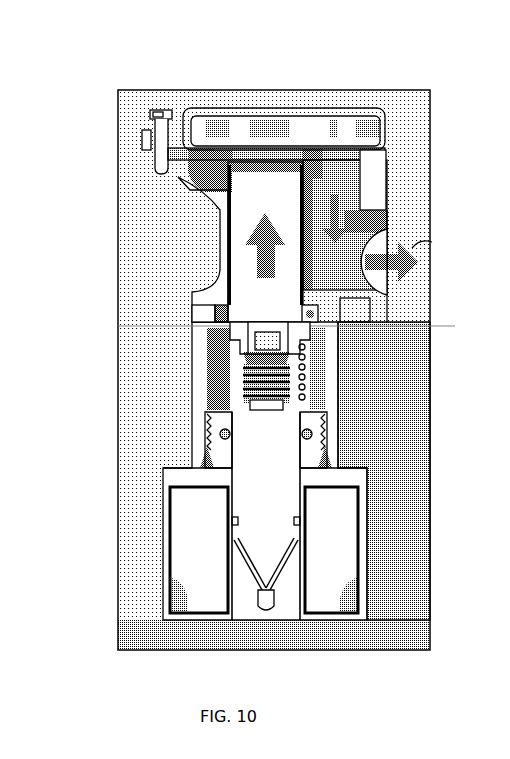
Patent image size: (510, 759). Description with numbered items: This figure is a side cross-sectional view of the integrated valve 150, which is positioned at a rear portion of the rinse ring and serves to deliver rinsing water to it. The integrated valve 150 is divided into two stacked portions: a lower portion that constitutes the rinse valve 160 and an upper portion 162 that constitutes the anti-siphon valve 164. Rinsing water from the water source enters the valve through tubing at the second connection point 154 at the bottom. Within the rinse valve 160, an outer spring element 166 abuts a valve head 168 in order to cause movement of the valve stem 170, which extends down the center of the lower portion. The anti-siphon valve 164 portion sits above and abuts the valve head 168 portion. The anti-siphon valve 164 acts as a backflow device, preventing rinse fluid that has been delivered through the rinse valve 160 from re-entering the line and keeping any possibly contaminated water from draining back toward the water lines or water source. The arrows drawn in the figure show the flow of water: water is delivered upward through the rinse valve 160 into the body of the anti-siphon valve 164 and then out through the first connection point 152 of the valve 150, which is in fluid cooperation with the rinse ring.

The integrated valve 150 is at (206, 92).
The first connection point 152 is at (384, 230).
The second connection point 154 is at (276, 618).
The rinse valve 160 is at (330, 428).
The upper portion 162 is at (100, 90).
The anti-siphon valve 164 is at (370, 172).
The outer spring element 166 is at (306, 367).
The valve head 168 is at (294, 341).
The valve stem 170 is at (280, 383).